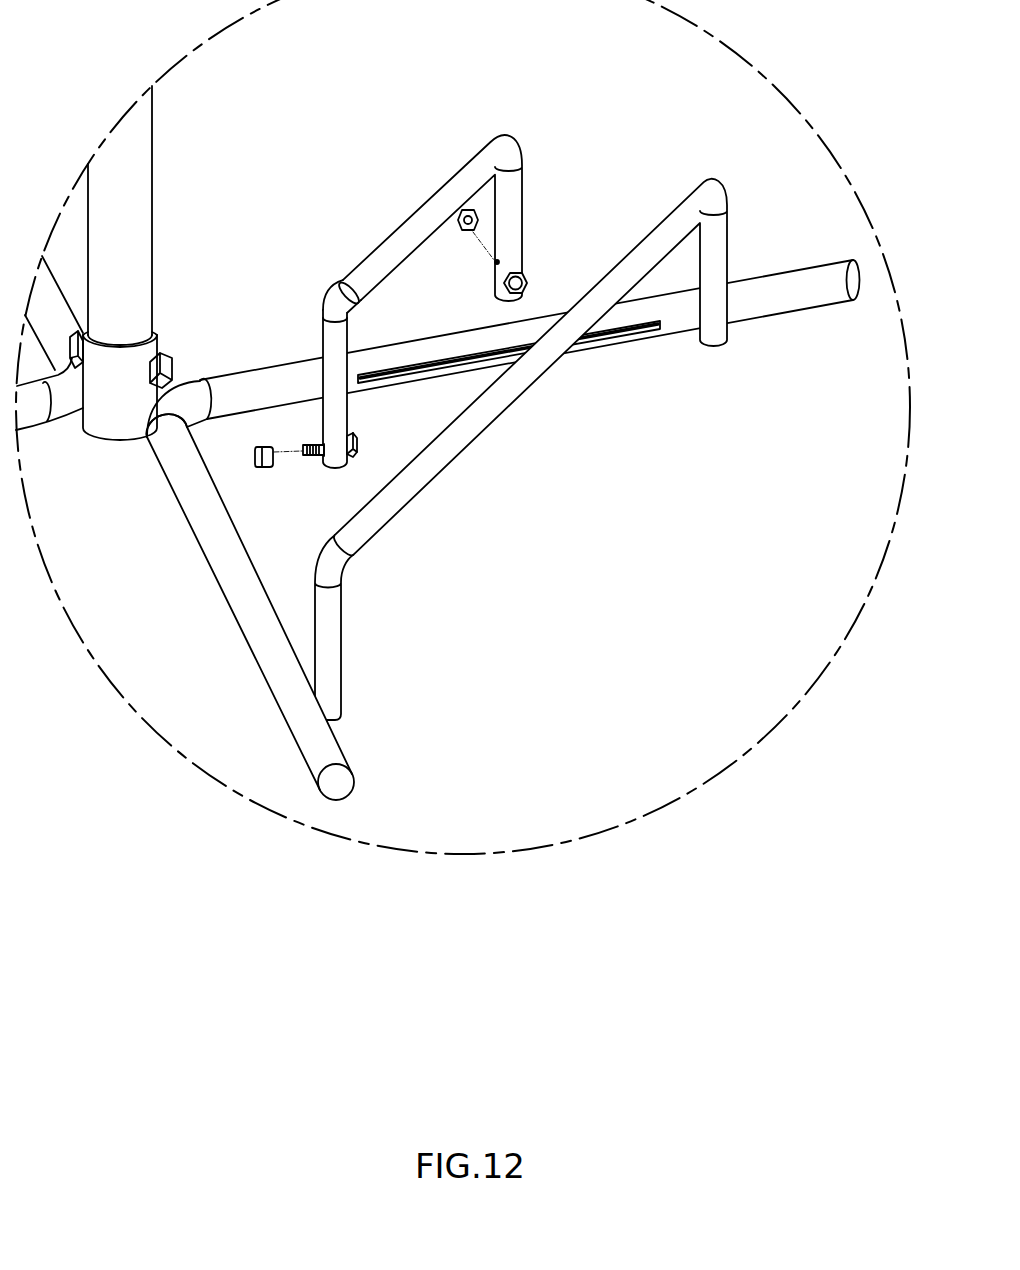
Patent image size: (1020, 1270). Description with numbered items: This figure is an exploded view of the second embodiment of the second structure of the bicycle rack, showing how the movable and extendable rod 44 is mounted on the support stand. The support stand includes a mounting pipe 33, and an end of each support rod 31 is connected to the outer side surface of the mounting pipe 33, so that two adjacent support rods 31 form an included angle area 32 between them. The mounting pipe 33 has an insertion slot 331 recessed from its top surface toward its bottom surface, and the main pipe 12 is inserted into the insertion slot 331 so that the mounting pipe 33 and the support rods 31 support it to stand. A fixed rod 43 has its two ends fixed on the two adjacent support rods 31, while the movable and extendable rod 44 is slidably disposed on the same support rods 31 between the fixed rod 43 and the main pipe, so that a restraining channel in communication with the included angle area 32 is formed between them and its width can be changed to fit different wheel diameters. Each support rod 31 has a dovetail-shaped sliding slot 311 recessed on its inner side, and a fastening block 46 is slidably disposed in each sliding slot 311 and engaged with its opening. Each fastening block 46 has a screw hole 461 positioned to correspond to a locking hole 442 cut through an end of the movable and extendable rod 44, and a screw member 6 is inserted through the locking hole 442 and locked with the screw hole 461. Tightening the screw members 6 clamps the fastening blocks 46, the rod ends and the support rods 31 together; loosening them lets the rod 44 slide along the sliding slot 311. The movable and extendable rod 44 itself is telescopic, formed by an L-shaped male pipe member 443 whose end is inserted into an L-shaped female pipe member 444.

The vertical post (frame member) 12 is at (137, 213).
The insertion slot 331 is at (122, 333).
The mounting pipe 33 is at (139, 377).
The included angle area 32 is at (212, 440).
The support rod 31 is at (492, 426).
The sliding slot 311 is at (623, 340).
The fastening block 46 is at (419, 416).
The screw hole 461 is at (452, 230).
The fixed rod 43 is at (672, 218).
The movable and extendable rod 44 is at (441, 420).
The male pipe member 443 is at (360, 320).
The female pipe member 444 is at (377, 273).
The locking hole 442 is at (265, 467).
The screw member 6 is at (355, 442).